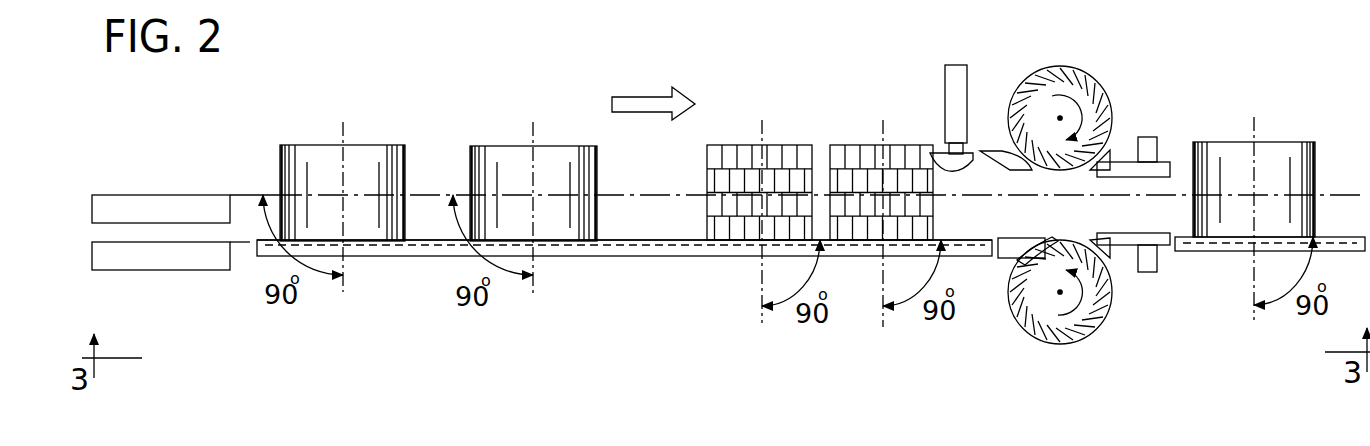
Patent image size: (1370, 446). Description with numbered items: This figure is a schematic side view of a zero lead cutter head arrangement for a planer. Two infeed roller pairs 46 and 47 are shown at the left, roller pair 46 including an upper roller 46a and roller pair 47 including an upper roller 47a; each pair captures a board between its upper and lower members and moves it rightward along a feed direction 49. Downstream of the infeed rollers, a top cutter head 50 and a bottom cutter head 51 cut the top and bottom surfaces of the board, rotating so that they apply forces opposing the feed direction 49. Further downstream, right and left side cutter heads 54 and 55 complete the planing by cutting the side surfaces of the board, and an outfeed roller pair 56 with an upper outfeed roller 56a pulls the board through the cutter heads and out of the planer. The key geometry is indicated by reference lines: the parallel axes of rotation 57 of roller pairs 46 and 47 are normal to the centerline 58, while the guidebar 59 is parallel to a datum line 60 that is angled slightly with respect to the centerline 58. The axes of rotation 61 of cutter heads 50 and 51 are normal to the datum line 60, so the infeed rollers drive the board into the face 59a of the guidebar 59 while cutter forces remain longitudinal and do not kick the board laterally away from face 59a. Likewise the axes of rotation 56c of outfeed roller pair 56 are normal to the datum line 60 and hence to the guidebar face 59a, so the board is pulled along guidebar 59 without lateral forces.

The infeed roller pair 46 is at (301, 145).
The upper roller 46a is at (376, 156).
The infeed roller pair 47 is at (501, 141).
The upper roller 47a is at (567, 165).
The feed direction 49 is at (638, 97).
The top cutter head 50 is at (770, 145).
The bottom cutter head 51 is at (843, 145).
The right side cutter head 54 is at (1103, 297).
The left side cutter head 55 is at (1102, 95).
The outfeed roller pair 56 is at (1287, 140).
The upper outfeed roller 56a is at (1308, 182).
The axes of rotation 56c is at (1253, 267).
The axes of rotation 57 is at (345, 249).
The centerline 58 is at (245, 195).
The guidebar 59 is at (673, 248).
The face 59a is at (436, 238).
The datum line 60 is at (250, 242).
The axes of rotation 61 is at (759, 289).